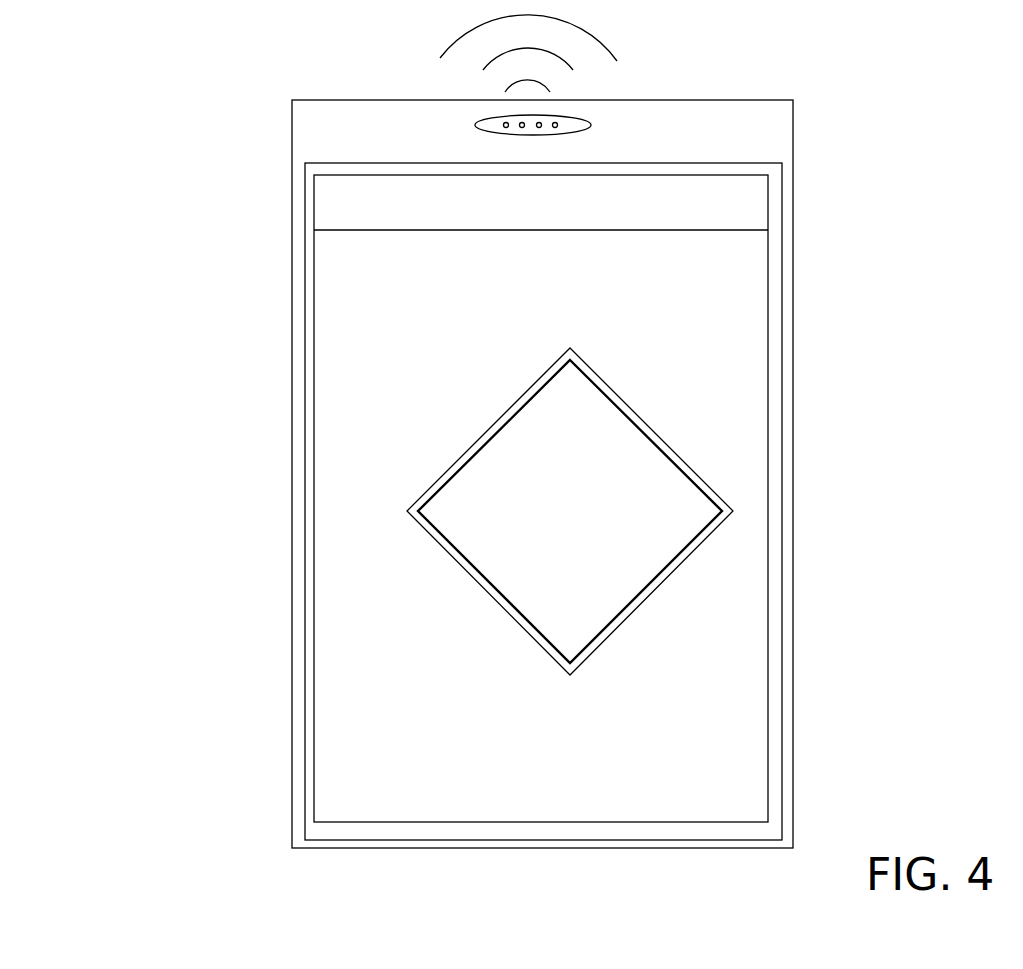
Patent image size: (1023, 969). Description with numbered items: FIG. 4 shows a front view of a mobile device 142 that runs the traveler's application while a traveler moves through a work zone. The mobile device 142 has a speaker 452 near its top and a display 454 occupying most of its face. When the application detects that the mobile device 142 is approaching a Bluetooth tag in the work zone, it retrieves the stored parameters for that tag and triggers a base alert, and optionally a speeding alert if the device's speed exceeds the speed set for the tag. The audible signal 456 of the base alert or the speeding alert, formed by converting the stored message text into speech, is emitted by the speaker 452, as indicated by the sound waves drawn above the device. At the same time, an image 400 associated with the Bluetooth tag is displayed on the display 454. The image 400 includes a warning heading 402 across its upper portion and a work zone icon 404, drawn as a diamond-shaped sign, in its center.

The mobile device 142 is at (793, 533).
The image 400 is at (745, 680).
The warning heading 402 is at (325, 208).
The work zone icon 404 is at (455, 463).
The speaker 452 is at (590, 127).
The display 454 is at (311, 367).
The audible signal 456 is at (600, 41).